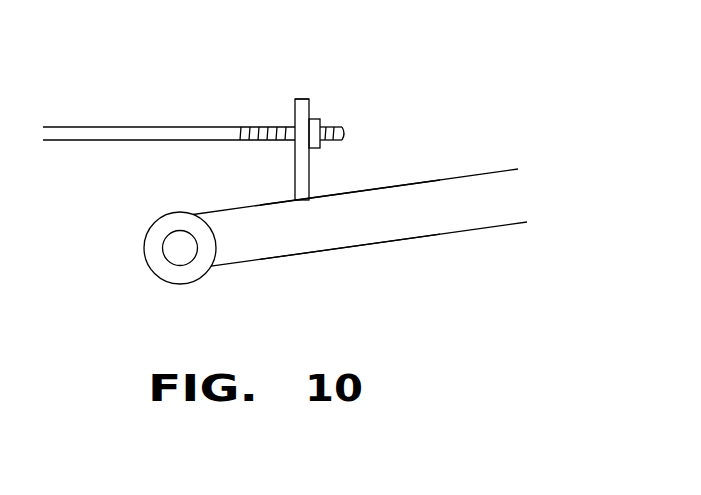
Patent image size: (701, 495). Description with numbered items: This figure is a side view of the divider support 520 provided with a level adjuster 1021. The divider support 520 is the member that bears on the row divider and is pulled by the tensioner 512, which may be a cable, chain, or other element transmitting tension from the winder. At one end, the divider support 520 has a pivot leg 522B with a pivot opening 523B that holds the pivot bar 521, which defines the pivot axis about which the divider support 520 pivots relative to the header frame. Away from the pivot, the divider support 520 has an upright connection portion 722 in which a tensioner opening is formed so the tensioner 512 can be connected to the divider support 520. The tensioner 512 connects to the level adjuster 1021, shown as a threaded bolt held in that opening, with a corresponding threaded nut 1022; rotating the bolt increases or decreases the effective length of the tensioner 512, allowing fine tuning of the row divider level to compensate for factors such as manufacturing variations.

The tensioner 512 is at (140, 128).
The level adjuster 1021 is at (290, 86).
The threaded nut 1022 is at (327, 110).
The connection portion 722 is at (302, 170).
The pivot opening 523B is at (177, 232).
The pivot bar 521 is at (181, 246).
The pivot leg 522B is at (243, 253).
The divider support 520 is at (340, 262).